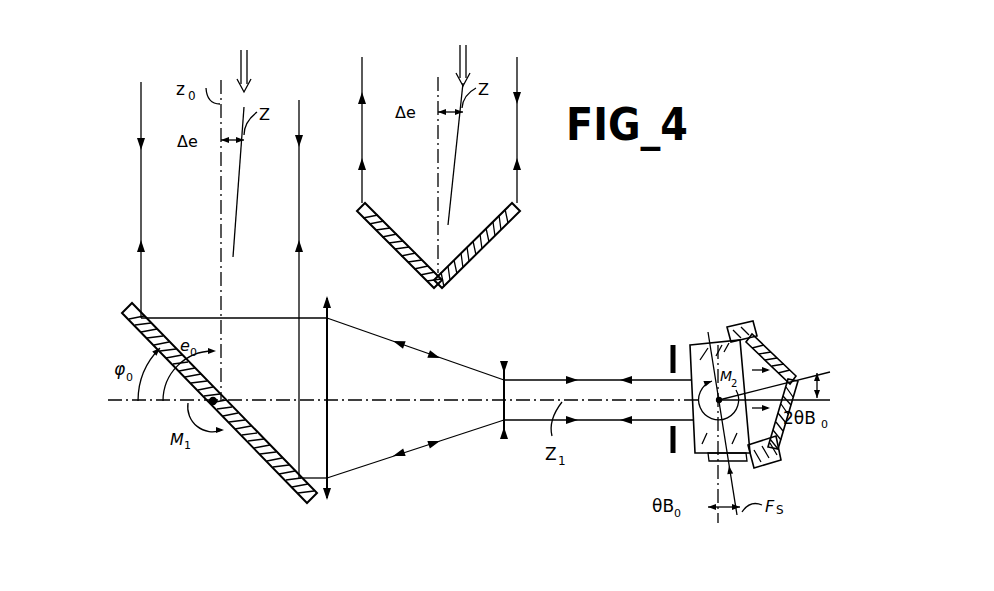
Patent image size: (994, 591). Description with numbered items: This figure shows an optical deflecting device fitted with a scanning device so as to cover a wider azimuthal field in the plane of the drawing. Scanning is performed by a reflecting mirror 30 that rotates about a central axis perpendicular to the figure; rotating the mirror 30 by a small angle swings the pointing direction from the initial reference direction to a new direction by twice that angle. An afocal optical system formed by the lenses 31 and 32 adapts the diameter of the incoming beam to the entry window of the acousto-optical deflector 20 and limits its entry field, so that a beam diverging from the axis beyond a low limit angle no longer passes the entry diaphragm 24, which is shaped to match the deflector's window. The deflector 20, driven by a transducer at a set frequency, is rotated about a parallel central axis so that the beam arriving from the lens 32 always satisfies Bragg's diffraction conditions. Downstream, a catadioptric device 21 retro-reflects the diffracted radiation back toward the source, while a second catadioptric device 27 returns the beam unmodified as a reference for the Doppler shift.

The acousto-optical deflector 20 is at (698, 442).
The catadioptric device 21 is at (766, 340).
The diaphragm 24 is at (670, 360).
The second catadioptric device 27 is at (492, 248).
The reflecting mirror 30 is at (247, 427).
The lens 31 is at (330, 384).
The lens 32 is at (507, 372).